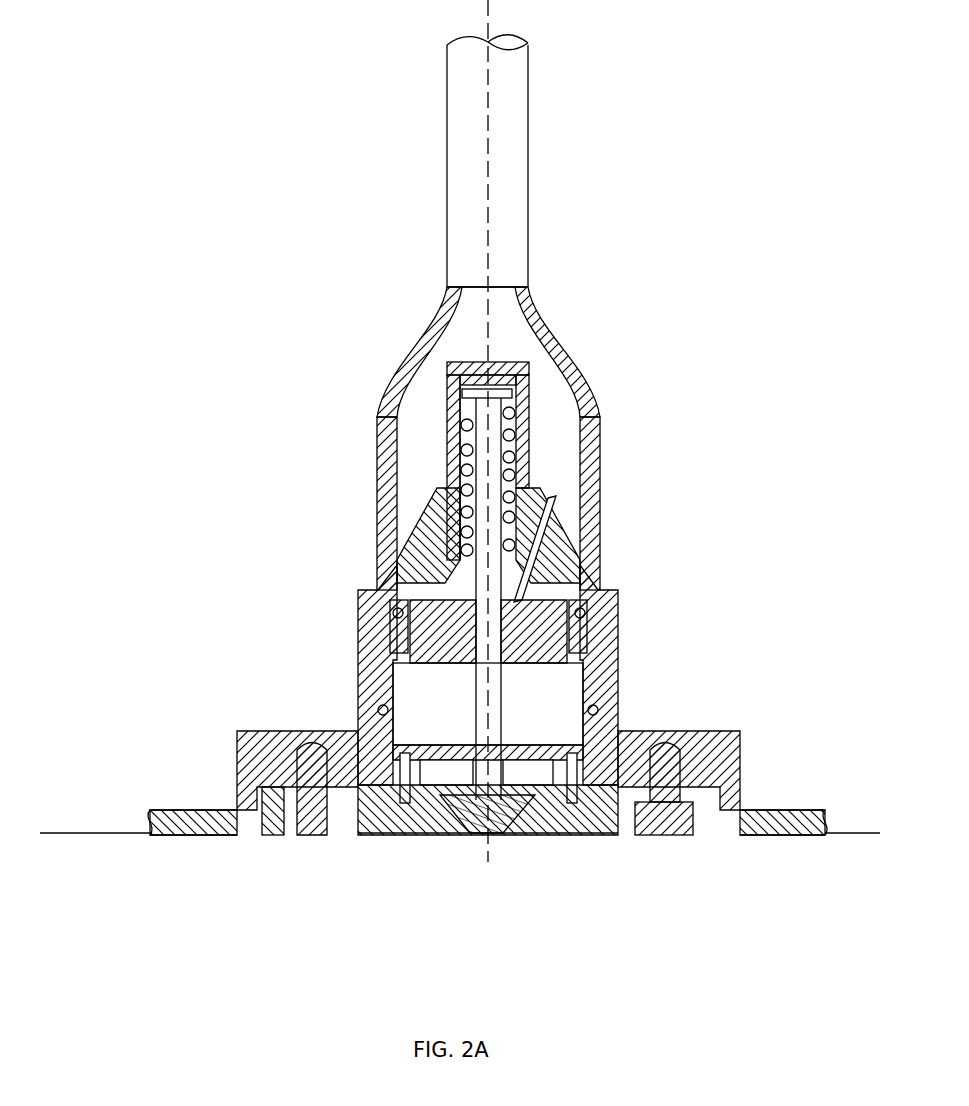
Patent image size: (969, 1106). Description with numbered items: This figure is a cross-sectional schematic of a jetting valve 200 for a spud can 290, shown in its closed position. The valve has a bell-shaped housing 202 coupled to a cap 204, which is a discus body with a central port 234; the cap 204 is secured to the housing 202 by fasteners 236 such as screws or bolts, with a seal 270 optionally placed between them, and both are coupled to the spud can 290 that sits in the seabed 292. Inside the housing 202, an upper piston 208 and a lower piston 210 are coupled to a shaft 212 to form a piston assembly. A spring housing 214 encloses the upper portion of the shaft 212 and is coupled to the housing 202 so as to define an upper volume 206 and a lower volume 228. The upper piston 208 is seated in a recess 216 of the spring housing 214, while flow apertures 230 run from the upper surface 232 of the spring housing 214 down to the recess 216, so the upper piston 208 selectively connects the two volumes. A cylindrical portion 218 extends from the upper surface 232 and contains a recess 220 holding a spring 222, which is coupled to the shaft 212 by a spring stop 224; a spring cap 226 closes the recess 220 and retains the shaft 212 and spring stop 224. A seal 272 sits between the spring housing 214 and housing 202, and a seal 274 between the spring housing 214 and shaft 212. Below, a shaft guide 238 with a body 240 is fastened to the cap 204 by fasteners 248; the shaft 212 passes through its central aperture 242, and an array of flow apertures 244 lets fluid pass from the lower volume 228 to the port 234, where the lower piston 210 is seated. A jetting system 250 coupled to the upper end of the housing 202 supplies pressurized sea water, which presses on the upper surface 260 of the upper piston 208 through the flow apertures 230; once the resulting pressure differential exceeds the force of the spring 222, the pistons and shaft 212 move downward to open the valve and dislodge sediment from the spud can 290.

The jetting valve 200 is at (182, 92).
The jetting system 250 is at (512, 157).
The spring cap 226 is at (531, 340).
The upper volume 206 is at (548, 390).
The housing 202 is at (592, 467).
The spring housing 214 is at (377, 568).
The recess 220 is at (523, 420).
The spring stop 224 is at (457, 402).
The spring 222 is at (455, 438).
The cylindrical portion 218 is at (532, 445).
The shaft 212 is at (500, 570).
The seal 274 is at (437, 533).
The upper surface 232 is at (547, 497).
The flow apertures 230 is at (600, 540).
The upper surface 260 is at (515, 597).
The recess 216 is at (575, 650).
The upper piston 208 is at (418, 635).
The seal 272 is at (590, 615).
The seal 270 is at (362, 712).
The fasteners 248 is at (598, 735).
The lower volume 228 is at (610, 690).
The body 240 is at (420, 745).
The central aperture 242 is at (470, 755).
The flow apertures 244 is at (532, 748).
The fasteners 236 is at (680, 768).
The shaft guide 238 is at (335, 765).
The cap 204 is at (707, 818).
The central port 234 is at (525, 822).
The lower piston 210 is at (470, 815).
The spud can 290 is at (800, 808).
The seabed 292 is at (78, 832).